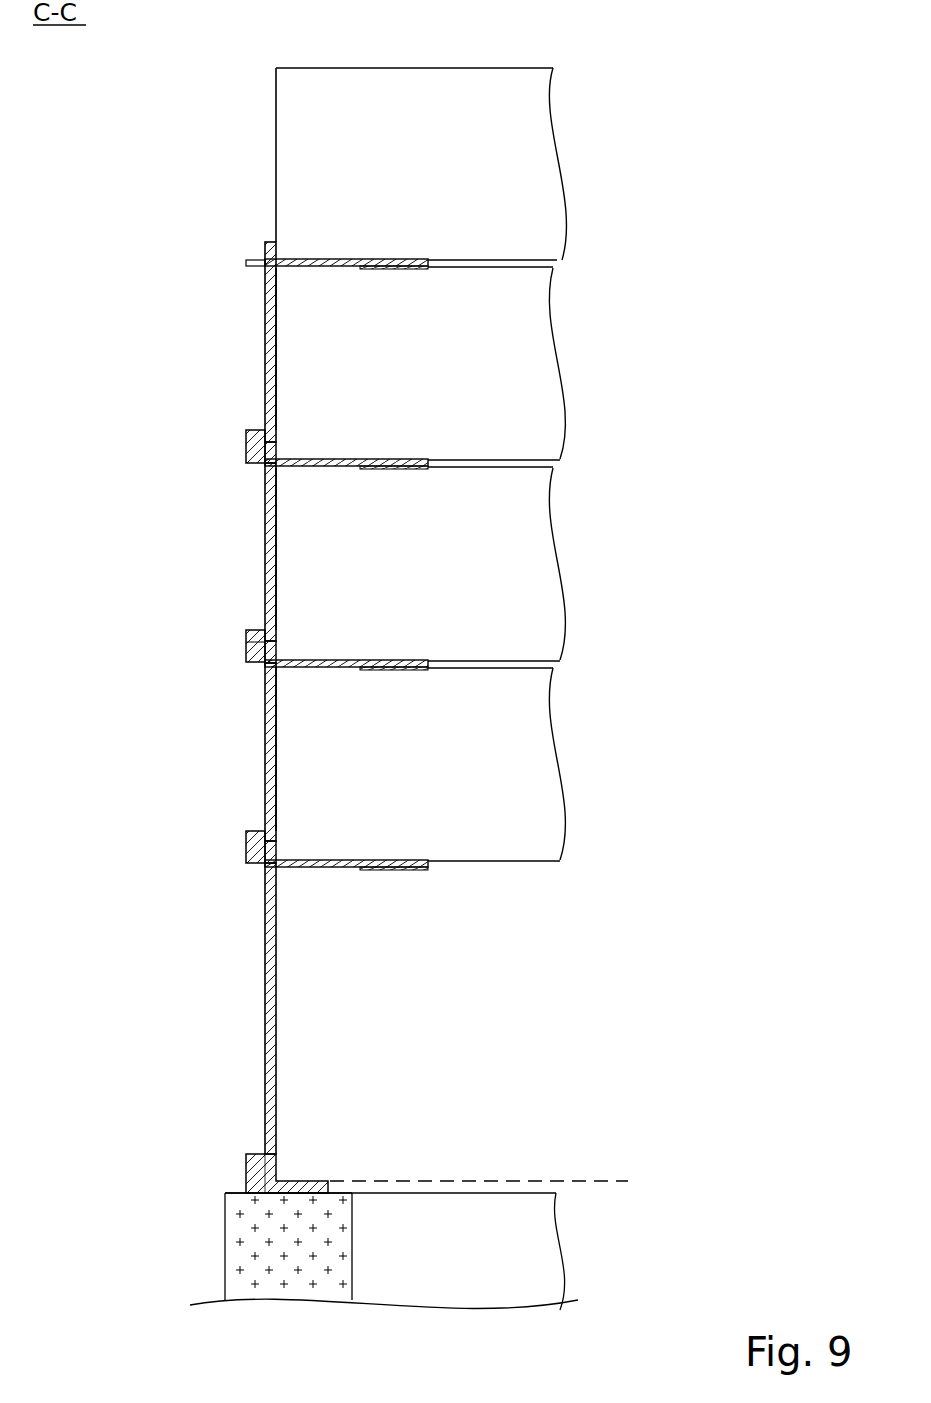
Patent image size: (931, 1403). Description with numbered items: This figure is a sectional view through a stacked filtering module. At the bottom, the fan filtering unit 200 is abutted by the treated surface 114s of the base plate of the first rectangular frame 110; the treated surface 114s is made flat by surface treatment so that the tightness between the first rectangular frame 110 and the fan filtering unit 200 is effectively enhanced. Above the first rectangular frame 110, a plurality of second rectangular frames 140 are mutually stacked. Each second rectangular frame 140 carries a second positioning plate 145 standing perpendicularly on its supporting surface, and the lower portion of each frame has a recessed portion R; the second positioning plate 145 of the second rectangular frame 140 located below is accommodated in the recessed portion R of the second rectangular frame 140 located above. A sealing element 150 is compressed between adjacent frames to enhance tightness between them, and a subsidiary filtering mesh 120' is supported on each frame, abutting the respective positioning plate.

The subsidiary filtering mesh 120' is at (470, 464).
The second rectangular frame 140 is at (266, 350).
The sealing element 150 is at (250, 457).
The second positioning plate 145 is at (247, 634).
The recessed portion R is at (264, 632).
The first rectangular frame 110 is at (266, 1010).
The treated surface 114s is at (258, 1194).
The fan filtering unit 200 is at (228, 1254).